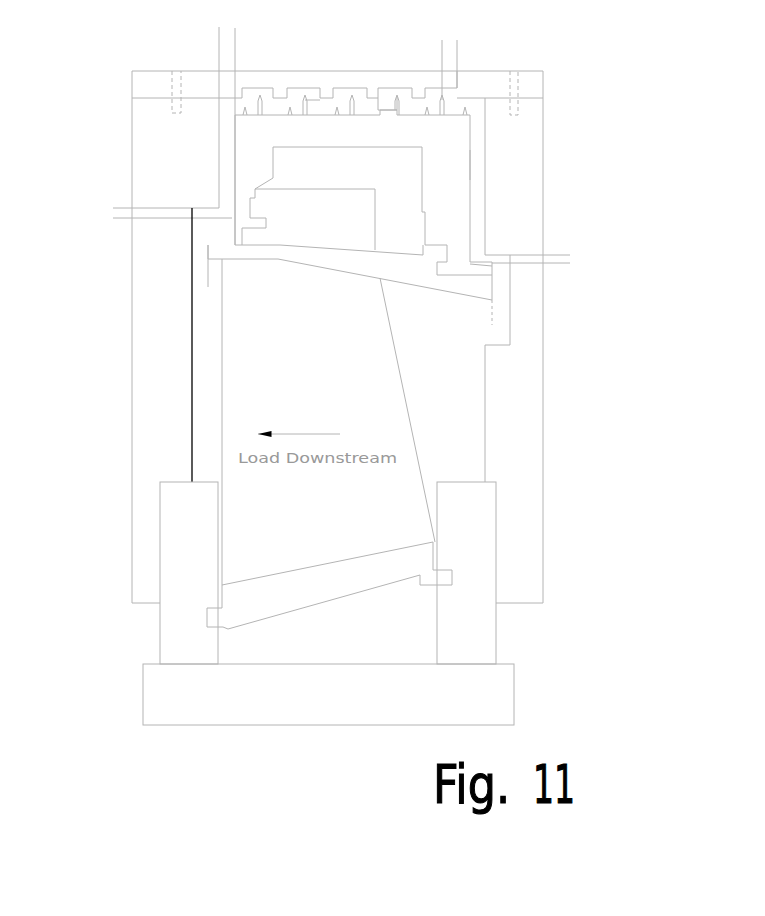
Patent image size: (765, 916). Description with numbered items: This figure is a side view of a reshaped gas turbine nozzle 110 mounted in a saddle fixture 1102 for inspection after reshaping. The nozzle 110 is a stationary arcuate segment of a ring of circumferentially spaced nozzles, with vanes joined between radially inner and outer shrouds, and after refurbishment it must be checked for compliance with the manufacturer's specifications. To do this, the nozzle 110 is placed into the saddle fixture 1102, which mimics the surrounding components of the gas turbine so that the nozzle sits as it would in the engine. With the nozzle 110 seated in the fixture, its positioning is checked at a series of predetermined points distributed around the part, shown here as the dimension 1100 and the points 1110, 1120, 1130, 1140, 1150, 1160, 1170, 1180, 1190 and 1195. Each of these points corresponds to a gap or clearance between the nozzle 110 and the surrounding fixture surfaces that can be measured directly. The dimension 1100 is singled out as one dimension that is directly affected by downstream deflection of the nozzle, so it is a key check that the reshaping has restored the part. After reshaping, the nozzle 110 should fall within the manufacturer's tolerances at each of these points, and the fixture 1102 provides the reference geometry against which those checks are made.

The nozzle 110 is at (318, 338).
The dimension 1100 is at (240, 283).
The saddle fixture 1102 is at (490, 700).
The point 1110 is at (118, 180).
The point 1120 is at (250, 157).
The point 1130 is at (267, 32).
The point 1140 is at (314, 127).
The point 1150 is at (389, 127).
The point 1160 is at (413, 45).
The point 1170 is at (438, 144).
The point 1180 is at (438, 188).
The point 1190 is at (565, 292).
The point 1195 is at (462, 318).